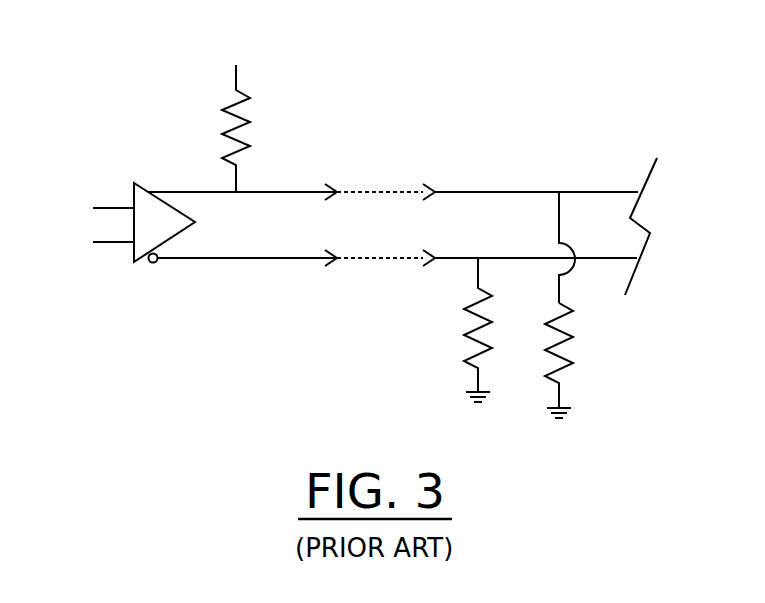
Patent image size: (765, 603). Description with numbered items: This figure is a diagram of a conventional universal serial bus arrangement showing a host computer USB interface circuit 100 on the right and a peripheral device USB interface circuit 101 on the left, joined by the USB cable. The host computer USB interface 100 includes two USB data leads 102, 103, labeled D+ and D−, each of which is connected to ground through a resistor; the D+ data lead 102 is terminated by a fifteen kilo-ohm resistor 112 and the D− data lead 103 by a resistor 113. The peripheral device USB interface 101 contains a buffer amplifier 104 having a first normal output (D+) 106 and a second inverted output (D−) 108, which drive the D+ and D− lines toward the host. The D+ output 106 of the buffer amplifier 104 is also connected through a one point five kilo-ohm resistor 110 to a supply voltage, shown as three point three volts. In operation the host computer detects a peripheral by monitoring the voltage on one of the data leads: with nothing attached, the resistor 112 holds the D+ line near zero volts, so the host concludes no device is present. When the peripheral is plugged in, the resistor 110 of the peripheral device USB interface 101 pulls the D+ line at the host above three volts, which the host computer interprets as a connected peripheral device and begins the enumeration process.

The peripheral device USB interface circuit 101 is at (148, 43).
The 1.5 kΩ resistor 110 is at (223, 107).
The buffer amplifier 104 is at (144, 223).
The first normal output of the buffer (D+) 106 is at (318, 196).
The second inverted output of the buffer (D−) 108 is at (262, 257).
The host computer universal serial bus interface circuit 100 is at (537, 178).
The USB data lead (D+) 102 is at (500, 196).
The USB data lead (D−) 103 is at (448, 258).
The resistor 113 is at (463, 352).
The 15 kΩ resistor 112 is at (573, 358).